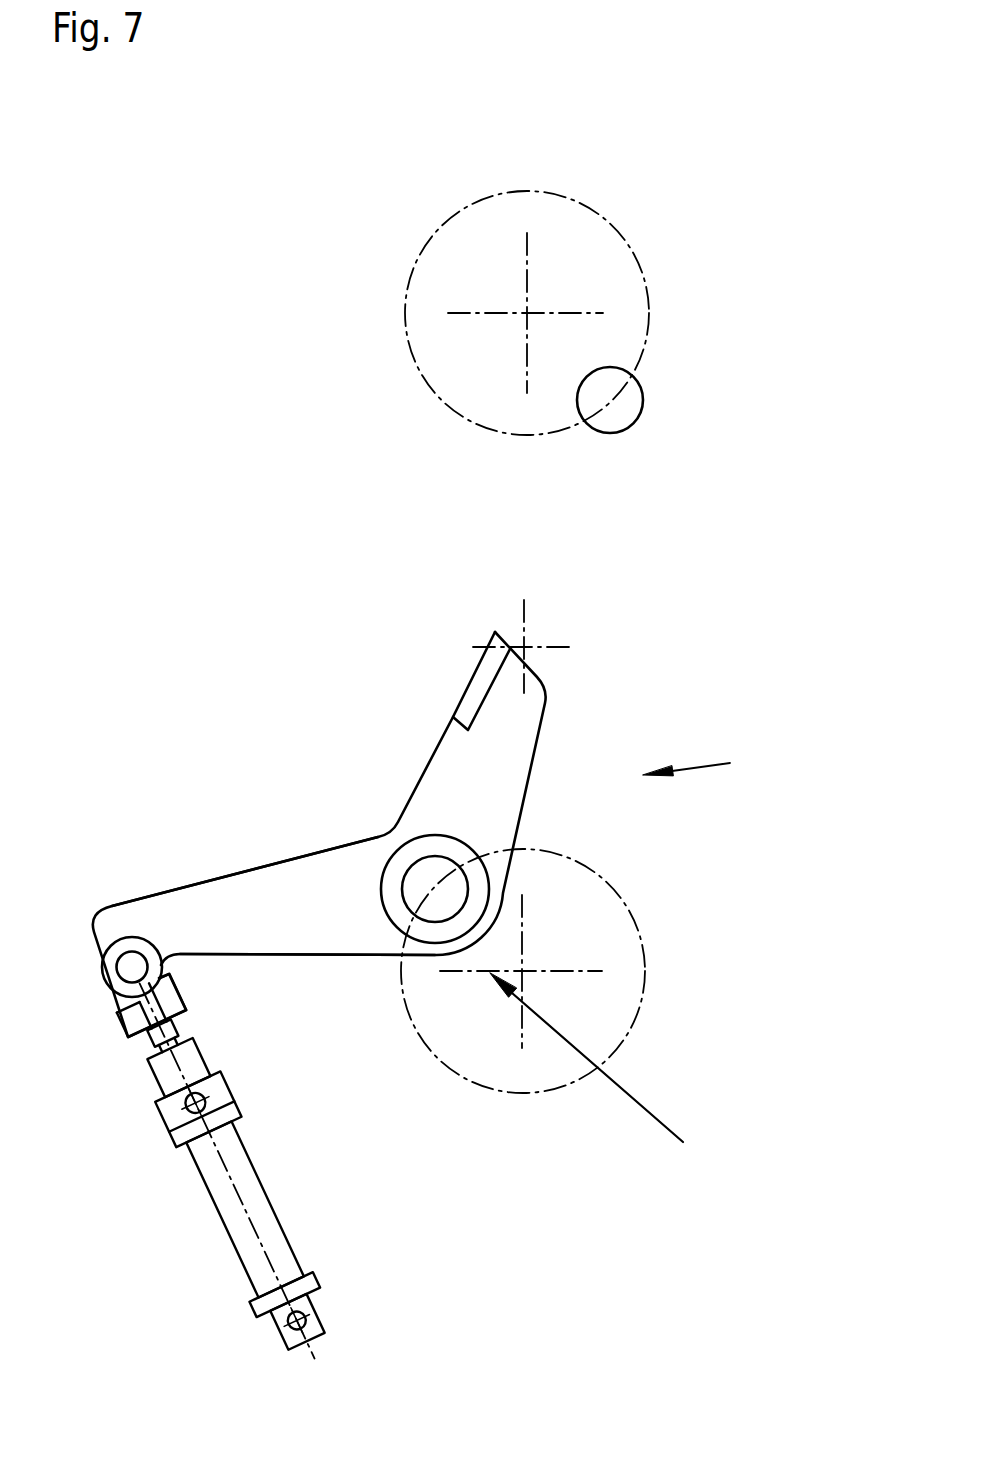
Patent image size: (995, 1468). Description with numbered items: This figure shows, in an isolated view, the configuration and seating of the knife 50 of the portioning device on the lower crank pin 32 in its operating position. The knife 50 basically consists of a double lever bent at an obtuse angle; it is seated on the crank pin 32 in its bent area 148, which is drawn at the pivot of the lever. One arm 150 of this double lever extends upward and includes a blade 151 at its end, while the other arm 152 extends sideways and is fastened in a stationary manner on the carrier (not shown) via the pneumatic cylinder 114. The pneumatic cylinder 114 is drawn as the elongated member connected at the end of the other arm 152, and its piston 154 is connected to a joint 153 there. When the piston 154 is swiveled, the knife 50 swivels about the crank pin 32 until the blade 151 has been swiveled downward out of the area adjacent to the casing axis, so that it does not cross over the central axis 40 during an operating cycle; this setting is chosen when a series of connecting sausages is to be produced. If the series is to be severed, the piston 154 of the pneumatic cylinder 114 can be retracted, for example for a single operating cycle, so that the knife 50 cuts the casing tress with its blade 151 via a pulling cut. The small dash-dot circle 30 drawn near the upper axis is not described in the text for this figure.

The roller 30 is at (617, 412).
The lower crank pin 32 is at (452, 903).
The central axis 40 is at (527, 643).
The knife 50 is at (707, 767).
The pneumatic cylinder 114 is at (237, 1232).
The bent area 148 is at (567, 1004).
The arm 150 is at (402, 757).
The blade 151 is at (473, 683).
The other arm 152 is at (319, 883).
The joint 153 is at (130, 967).
The piston 154 is at (152, 1037).